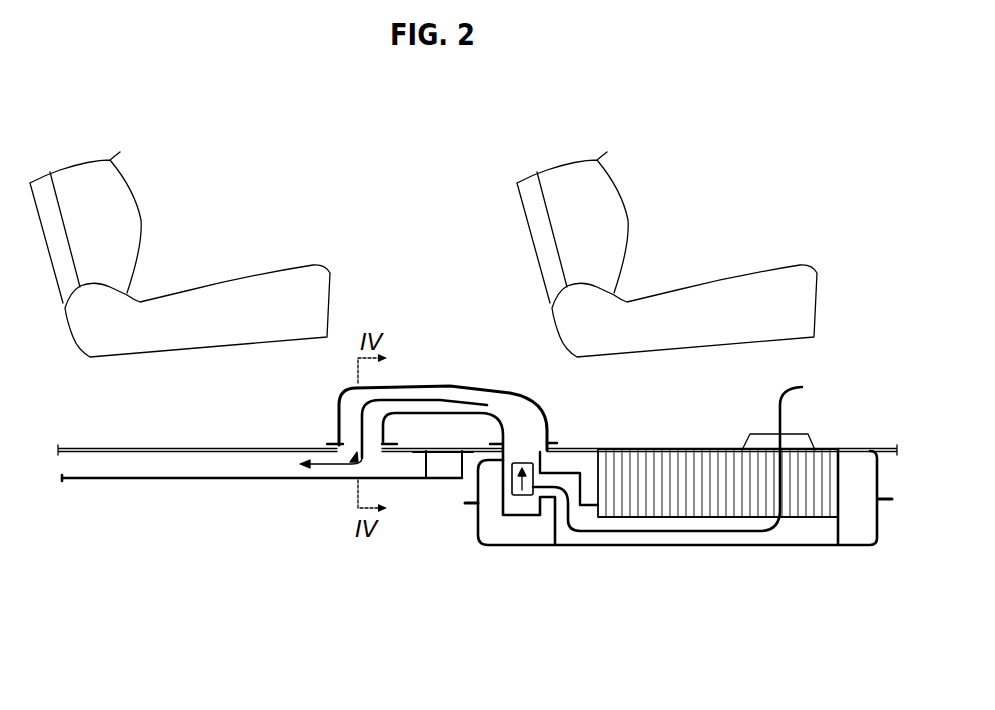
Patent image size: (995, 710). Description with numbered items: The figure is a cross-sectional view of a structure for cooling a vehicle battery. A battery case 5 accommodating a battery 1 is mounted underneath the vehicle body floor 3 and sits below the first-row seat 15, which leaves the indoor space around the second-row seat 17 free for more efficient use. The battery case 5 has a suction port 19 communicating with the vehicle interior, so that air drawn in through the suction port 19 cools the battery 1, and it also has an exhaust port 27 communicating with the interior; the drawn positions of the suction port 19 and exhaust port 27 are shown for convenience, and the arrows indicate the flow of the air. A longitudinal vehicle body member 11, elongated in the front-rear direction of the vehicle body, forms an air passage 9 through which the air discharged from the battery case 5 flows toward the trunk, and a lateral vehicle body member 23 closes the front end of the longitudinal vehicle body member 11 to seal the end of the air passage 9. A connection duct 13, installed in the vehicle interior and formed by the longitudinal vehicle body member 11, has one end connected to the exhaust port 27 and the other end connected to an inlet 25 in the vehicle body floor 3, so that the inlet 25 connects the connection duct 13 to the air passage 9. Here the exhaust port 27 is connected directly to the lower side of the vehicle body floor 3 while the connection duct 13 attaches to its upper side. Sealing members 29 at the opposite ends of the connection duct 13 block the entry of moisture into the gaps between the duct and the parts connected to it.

The battery 1 is at (705, 500).
The vehicle body floor 3 is at (155, 448).
The battery case 5 is at (878, 543).
The air passage 9 is at (238, 465).
The longitudinal vehicle body member 11 is at (160, 480).
The connection duct 13 is at (447, 387).
The first-row seat 15 is at (728, 278).
The second-row seat 17 is at (237, 280).
The suction port 19 is at (800, 448).
The lateral vehicle body member 23 is at (445, 480).
The inlet 25 is at (352, 464).
The exhaust port 27 is at (528, 448).
The sealing member 29 is at (333, 442).